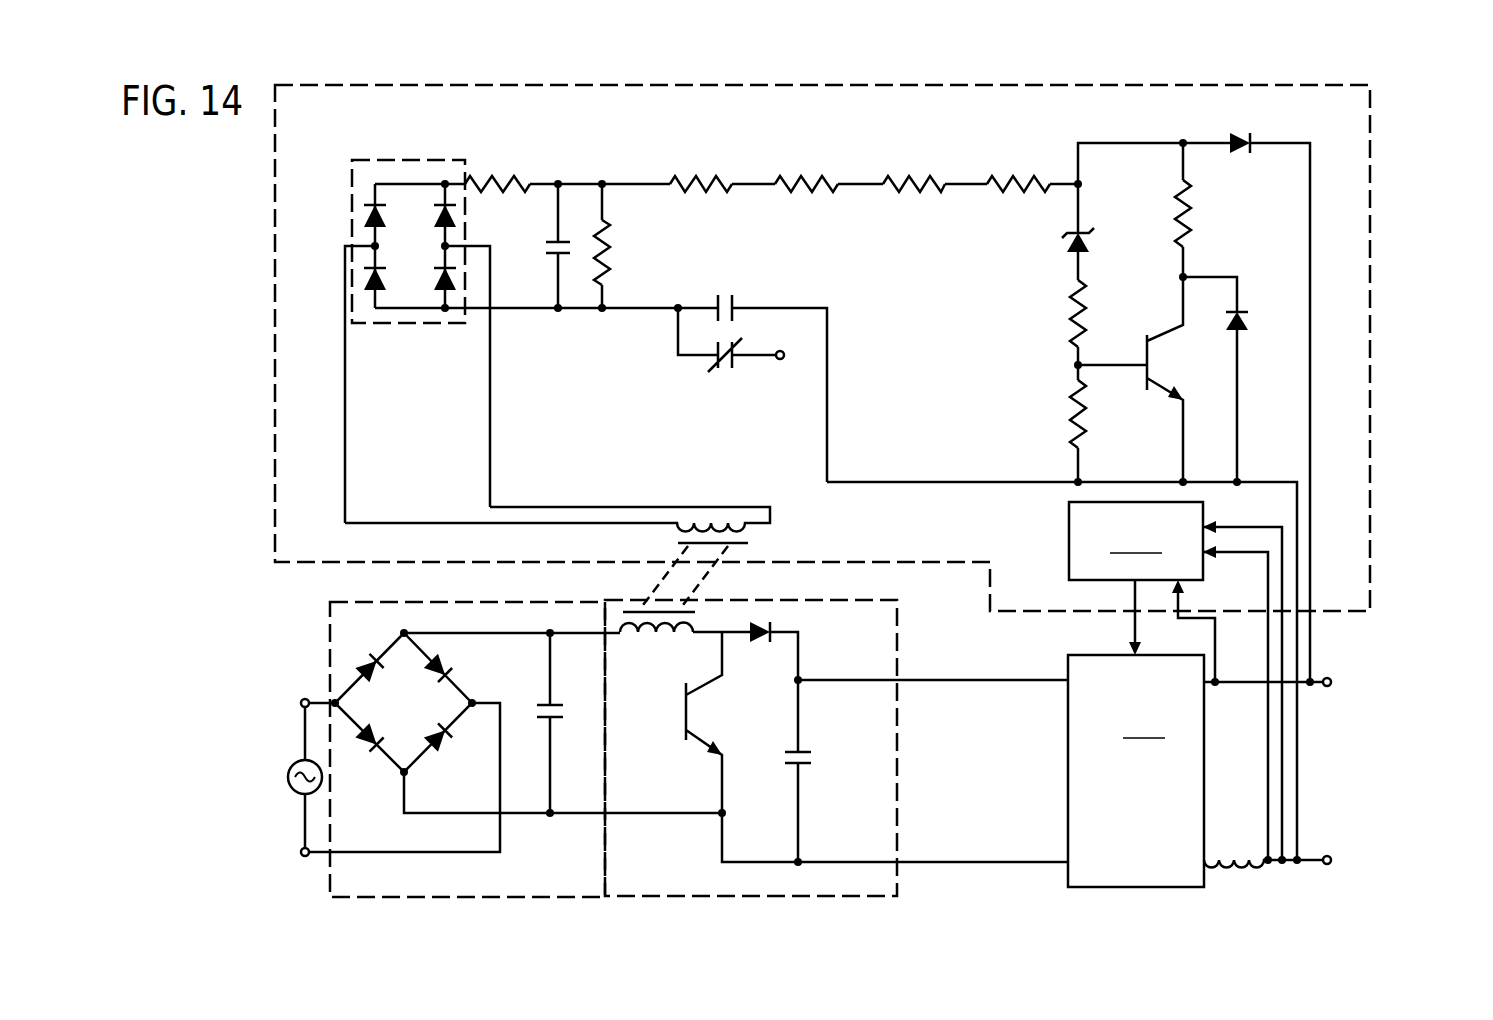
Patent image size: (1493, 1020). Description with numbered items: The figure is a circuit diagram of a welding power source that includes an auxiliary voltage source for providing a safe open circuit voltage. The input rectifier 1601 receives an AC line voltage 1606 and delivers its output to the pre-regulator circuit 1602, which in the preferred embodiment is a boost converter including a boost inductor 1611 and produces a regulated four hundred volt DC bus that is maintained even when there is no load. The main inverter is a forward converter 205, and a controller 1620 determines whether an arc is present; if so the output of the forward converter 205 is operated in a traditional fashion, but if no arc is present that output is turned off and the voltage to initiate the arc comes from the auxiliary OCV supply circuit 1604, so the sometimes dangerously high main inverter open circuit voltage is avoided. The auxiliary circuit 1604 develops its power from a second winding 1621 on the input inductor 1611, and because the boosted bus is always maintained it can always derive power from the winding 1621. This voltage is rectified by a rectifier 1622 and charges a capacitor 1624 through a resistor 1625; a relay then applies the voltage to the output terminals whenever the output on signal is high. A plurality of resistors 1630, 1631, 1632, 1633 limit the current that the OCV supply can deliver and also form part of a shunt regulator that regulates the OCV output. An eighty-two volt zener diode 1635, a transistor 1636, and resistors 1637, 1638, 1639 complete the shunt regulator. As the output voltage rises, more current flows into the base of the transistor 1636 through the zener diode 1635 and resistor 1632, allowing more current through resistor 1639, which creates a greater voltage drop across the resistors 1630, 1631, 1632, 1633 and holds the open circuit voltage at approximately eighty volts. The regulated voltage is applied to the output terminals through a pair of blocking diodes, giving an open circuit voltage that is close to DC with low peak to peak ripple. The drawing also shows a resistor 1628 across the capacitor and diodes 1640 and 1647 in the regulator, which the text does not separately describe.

The auxiliary OCV supply circuit 1604 is at (1370, 215).
The rectifier 1622 is at (465, 161).
The resistor 1625 is at (503, 194).
The capacitor 1624 is at (547, 252).
The resistor 1628 is at (612, 250).
The resistor 1630 is at (673, 177).
The resistor 1631 is at (780, 177).
The resistor 1632 is at (880, 177).
The resistor 1633 is at (990, 177).
The zener diode 1635 is at (1088, 236).
The transistor 1636 is at (1143, 353).
The resistor 1637 is at (1068, 318).
The resistor 1638 is at (1075, 417).
The resistor 1639 is at (1196, 203).
The diode 1640 is at (1240, 132).
The diode 1647 is at (1246, 325).
The second winding 1621 is at (728, 525).
The controller 1620 is at (1175, 681).
The forward converter 205 is at (1199, 771).
The input rectifier 1601 is at (492, 601).
The pre-regulator circuit 1602 is at (836, 733).
The AC line voltage 1606 is at (290, 764).
The boost inductor 1611 is at (647, 642).